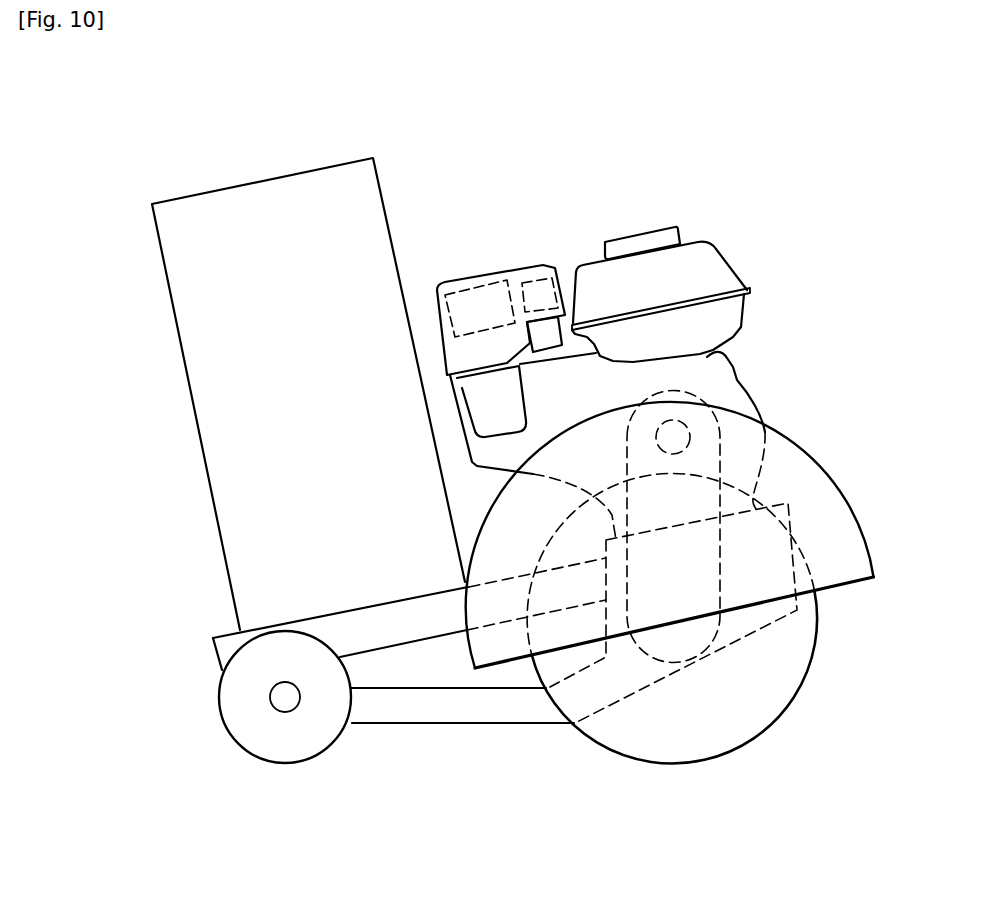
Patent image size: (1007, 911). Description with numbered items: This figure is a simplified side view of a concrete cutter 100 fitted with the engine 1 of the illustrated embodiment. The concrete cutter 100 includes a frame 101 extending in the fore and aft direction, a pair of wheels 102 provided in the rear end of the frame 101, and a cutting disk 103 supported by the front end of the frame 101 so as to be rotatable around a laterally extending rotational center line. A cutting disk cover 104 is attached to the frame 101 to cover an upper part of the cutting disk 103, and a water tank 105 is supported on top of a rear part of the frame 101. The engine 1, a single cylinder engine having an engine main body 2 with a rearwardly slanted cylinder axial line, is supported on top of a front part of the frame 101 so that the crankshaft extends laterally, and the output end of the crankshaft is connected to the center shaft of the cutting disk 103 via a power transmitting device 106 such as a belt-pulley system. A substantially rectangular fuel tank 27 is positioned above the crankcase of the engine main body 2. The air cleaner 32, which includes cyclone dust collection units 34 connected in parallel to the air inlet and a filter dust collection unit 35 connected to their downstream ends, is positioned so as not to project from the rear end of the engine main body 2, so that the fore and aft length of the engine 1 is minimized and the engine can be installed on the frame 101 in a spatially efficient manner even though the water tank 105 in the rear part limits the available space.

The concrete cutter 100 is at (466, 131).
The engine 1 is at (708, 226).
The engine main body 2 is at (725, 367).
The fuel tank 27 is at (727, 277).
The air cleaner 32 is at (477, 272).
The cyclone dust collection unit 34 is at (537, 285).
The filter dust collection unit 35 is at (458, 293).
The frame 101 is at (433, 715).
The wheel 102 is at (283, 753).
The cutting disk 103 is at (785, 695).
The cutting disk cover 104 is at (830, 502).
The water tank 105 is at (232, 195).
The power transmitting device 106 is at (650, 657).